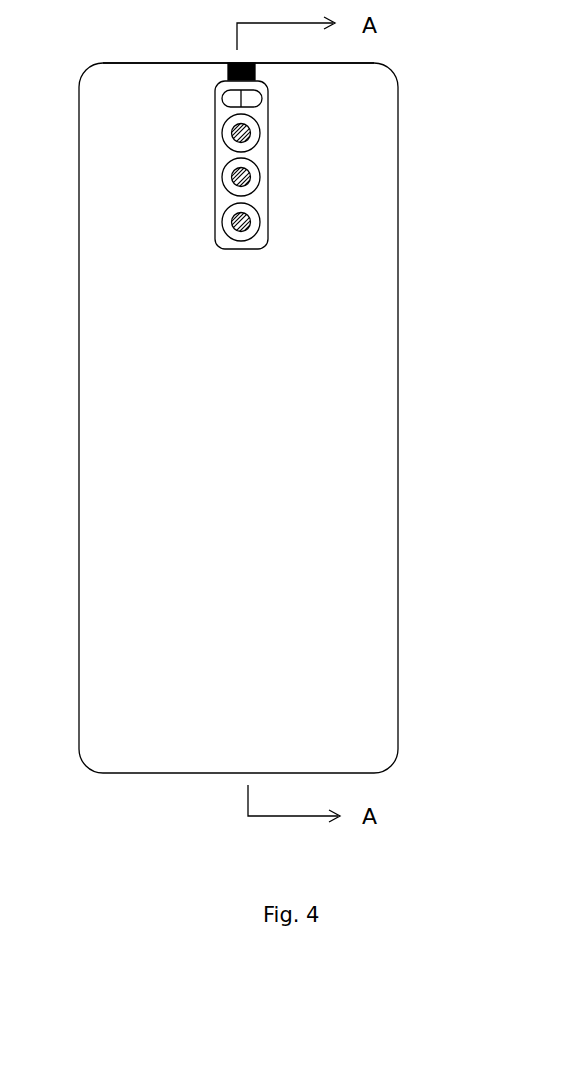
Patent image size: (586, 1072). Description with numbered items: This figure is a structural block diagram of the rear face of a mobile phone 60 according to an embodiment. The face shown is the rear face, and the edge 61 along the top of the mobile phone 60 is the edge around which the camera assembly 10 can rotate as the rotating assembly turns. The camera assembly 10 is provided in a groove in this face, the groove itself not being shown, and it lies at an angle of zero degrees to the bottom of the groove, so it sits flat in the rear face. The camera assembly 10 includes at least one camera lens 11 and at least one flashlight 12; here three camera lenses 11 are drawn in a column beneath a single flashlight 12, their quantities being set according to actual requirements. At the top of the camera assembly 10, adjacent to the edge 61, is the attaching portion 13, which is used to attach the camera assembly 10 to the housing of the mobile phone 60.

The camera assembly 10 is at (359, 185).
The camera lens 11 is at (361, 231).
The flashlight 12 is at (366, 162).
The attaching portion 13 is at (367, 108).
The mobile phone 60 is at (278, 418).
The edge 61 is at (213, 36).